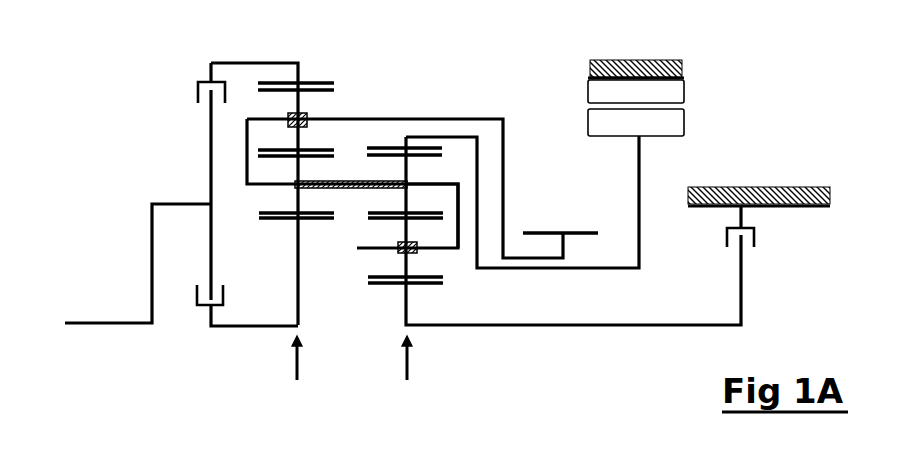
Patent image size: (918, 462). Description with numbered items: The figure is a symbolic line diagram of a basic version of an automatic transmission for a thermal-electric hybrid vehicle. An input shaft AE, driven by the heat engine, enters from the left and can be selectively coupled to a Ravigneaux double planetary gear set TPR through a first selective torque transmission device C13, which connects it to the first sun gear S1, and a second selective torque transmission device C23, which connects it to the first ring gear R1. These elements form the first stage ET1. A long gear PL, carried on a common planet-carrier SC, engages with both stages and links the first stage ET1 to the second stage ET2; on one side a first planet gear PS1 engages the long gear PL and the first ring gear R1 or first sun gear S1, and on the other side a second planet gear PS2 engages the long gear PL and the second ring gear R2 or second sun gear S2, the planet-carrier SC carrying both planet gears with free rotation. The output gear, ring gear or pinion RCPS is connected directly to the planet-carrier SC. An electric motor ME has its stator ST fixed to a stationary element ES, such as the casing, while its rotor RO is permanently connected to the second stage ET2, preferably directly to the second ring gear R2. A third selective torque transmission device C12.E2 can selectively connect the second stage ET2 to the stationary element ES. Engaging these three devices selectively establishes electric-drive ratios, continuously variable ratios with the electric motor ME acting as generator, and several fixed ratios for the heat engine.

The input shaft AE is at (108, 322).
The second selective torque transmission device C23 is at (197, 90).
The first selective torque transmission device C13 is at (210, 307).
The first ring gear R1 is at (305, 80).
The first planet gear PS1 is at (313, 110).
The first sun gear S1 is at (280, 221).
The long gear PL is at (343, 189).
The second ring gear R2 is at (393, 148).
The second planet gear PS2 is at (417, 250).
The second sun gear S2 is at (417, 285).
The common planet-carrier SC is at (443, 182).
The output gear, ring gear or pinion RCPS is at (560, 230).
The electric motor ME is at (711, 111).
The stationary element ES is at (800, 185).
The stator ST is at (684, 92).
The rotor RO is at (666, 122).
The third selective torque transmission device C12.E2 is at (753, 247).
The first stage ET1 is at (296, 370).
The second stage ET2 is at (402, 370).
The Ravigneaux double planetary gear set TPR is at (432, 405).